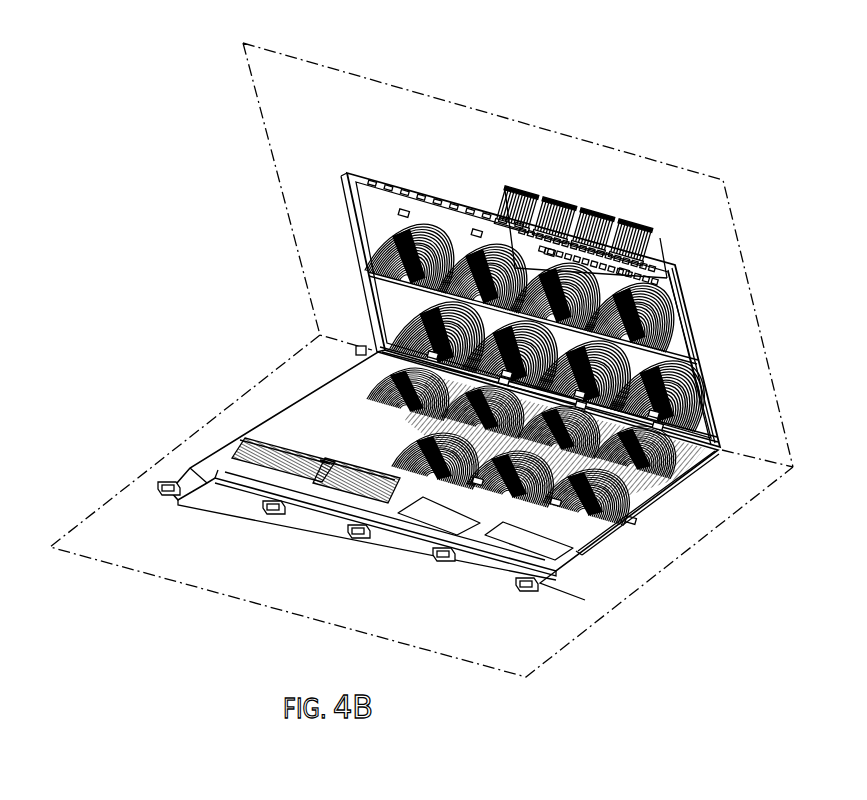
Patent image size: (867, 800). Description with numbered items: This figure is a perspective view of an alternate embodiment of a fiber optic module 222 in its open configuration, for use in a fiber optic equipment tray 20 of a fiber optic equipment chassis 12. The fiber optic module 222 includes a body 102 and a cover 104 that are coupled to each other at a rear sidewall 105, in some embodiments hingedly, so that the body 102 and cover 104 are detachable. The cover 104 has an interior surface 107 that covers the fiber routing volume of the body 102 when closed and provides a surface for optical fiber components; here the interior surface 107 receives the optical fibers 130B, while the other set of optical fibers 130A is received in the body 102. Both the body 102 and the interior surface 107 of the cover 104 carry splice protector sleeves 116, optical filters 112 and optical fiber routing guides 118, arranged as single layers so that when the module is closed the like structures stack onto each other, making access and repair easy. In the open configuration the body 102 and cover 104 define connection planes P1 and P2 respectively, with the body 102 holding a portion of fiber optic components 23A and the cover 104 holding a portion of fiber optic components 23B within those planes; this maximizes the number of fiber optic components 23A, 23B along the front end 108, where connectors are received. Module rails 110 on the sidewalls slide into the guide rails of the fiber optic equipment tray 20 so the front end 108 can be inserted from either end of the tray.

The fiber optic module 222 is at (254, 170).
The cover 104 is at (358, 192).
The splice protector sleeves 116 is at (401, 212).
The optical fibers 130B is at (432, 210).
The optical fiber routing guides 118 is at (473, 240).
The fiber optic components 23B is at (561, 166).
The connection plane P2 is at (676, 163).
The interior surface 107 is at (360, 200).
The optical filters 112 is at (376, 276).
The body 102 is at (361, 348).
The optical fibers 130A is at (337, 395).
The connection plane P1 is at (138, 478).
The fiber optic equipment tray 20 is at (190, 524).
The fiber optic components 23A is at (249, 492).
The front end 108 is at (408, 555).
The rear sidewall 105 is at (697, 437).
The module rails 110 is at (687, 443).
The fiber optic equipment chassis 12 is at (732, 614).